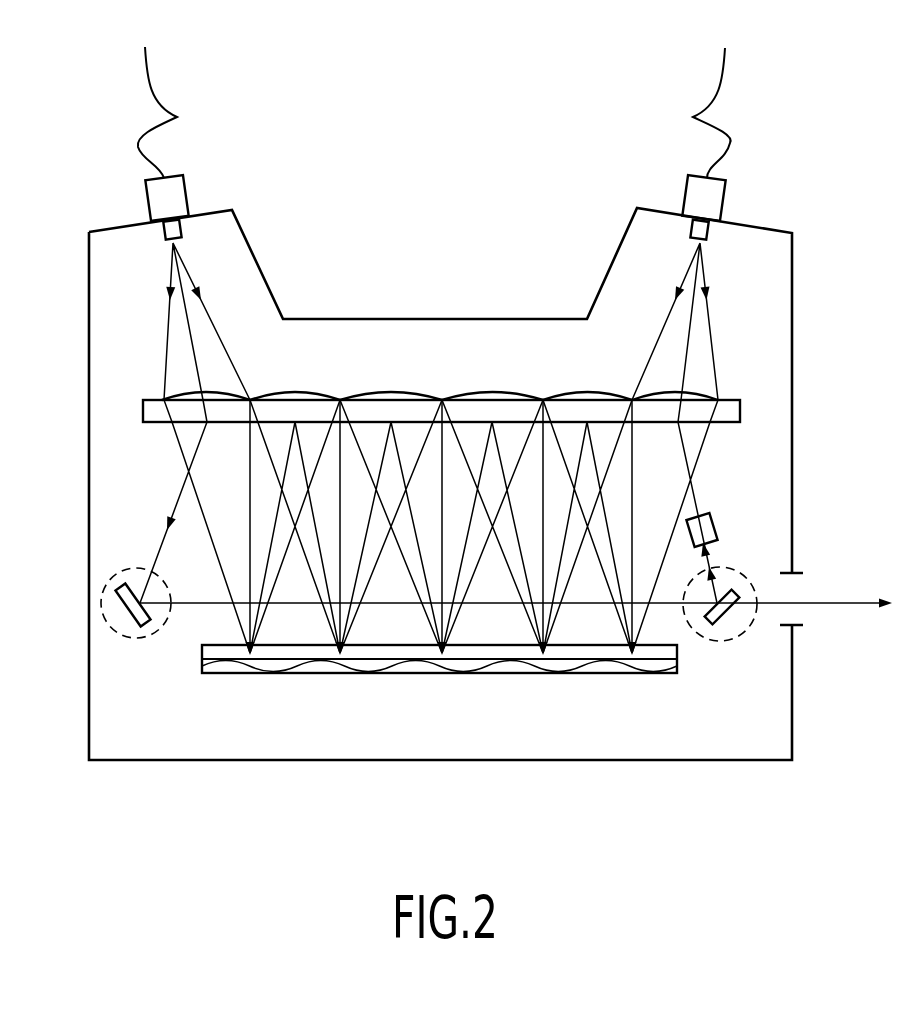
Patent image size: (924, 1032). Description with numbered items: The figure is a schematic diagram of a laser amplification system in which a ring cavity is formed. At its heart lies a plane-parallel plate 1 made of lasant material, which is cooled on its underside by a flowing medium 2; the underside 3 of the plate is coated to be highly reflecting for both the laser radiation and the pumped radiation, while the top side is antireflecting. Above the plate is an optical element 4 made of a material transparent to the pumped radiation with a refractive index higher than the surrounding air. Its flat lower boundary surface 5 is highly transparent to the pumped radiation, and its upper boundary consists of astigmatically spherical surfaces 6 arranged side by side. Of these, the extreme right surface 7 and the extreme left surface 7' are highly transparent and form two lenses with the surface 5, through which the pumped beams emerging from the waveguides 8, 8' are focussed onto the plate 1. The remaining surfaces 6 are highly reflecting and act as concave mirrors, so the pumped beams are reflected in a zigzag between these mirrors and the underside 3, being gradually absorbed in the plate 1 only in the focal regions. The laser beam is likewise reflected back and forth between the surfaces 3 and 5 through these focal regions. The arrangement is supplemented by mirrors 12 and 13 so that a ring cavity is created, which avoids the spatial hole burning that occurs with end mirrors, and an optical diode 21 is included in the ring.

The plane-parallel plate 1 is at (503, 648).
The flowing medium 2 is at (292, 661).
The underside 3 is at (417, 662).
The optical element 4 is at (397, 397).
The lower boundary surface 5 is at (497, 422).
The astigmatically spherical surfaces 6 is at (440, 323).
The extreme right surface 7 is at (664, 347).
The extreme left surface 7' is at (237, 323).
The waveguide 8 is at (664, 144).
The waveguide 8' is at (193, 144).
The mirror 12 is at (148, 625).
The mirror 13 is at (720, 617).
The optical diode 21 is at (717, 527).